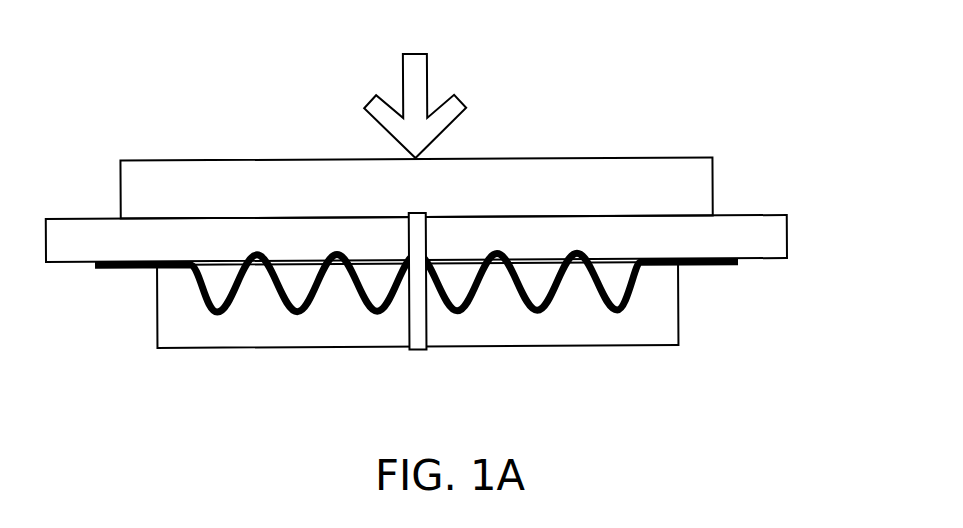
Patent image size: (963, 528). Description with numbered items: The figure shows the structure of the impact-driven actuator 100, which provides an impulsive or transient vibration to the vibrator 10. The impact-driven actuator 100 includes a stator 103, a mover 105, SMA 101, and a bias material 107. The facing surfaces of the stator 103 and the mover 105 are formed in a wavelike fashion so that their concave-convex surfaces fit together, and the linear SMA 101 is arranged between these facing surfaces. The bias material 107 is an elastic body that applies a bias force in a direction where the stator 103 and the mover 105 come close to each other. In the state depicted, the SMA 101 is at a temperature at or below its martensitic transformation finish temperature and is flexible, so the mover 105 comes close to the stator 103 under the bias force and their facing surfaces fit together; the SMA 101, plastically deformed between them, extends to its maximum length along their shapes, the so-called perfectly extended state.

The impact-driven actuator 100 is at (439, 236).
The vibrator 10 is at (477, 177).
The SMA 101 is at (727, 267).
The stator 103 is at (665, 320).
The mover 105 is at (590, 235).
The bias material 107 is at (417, 350).